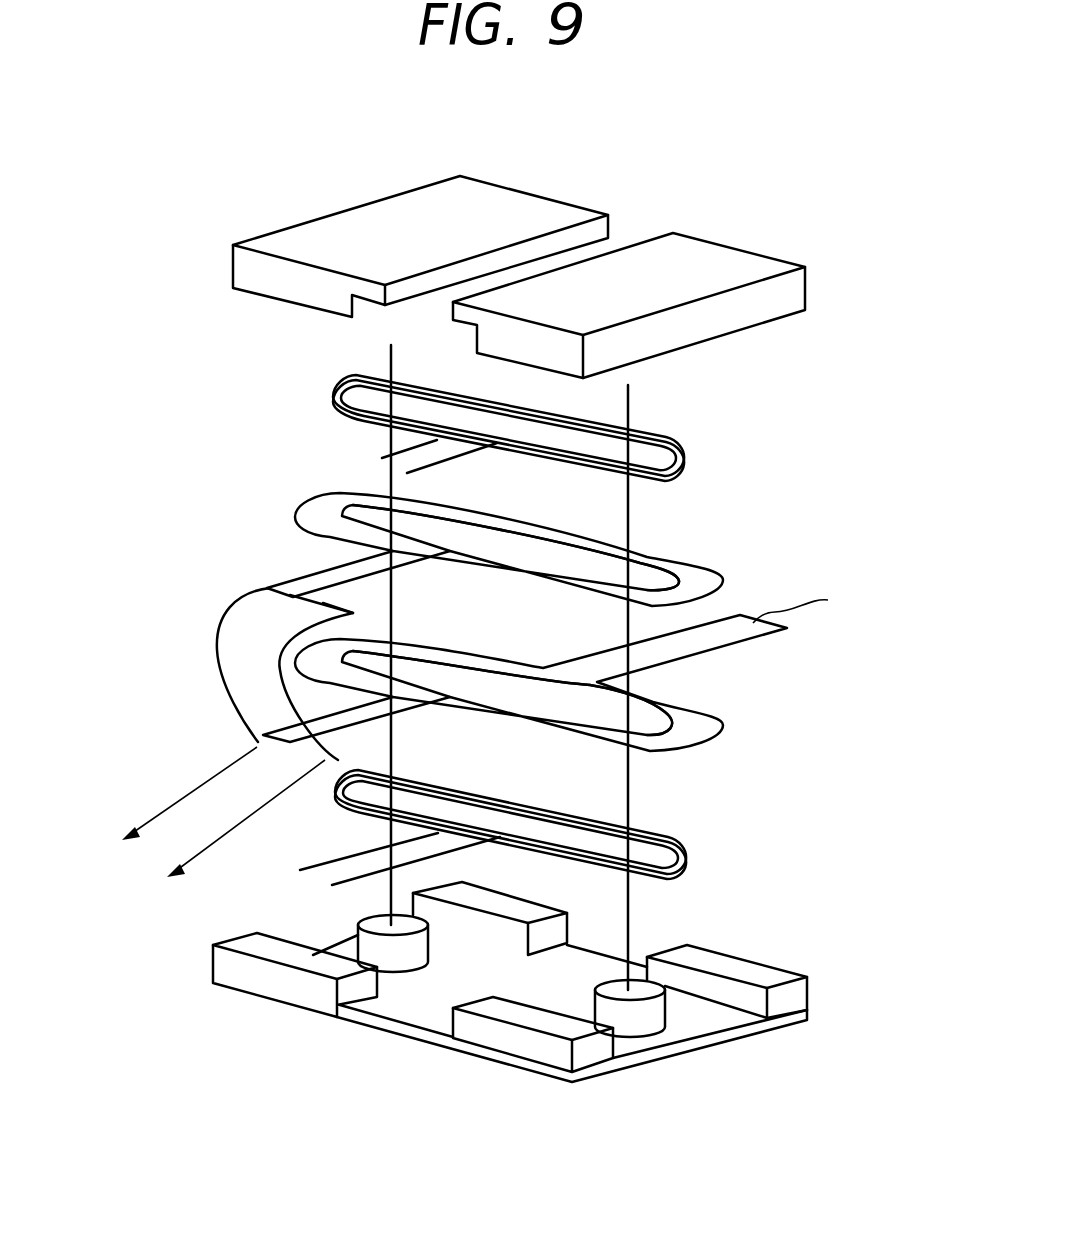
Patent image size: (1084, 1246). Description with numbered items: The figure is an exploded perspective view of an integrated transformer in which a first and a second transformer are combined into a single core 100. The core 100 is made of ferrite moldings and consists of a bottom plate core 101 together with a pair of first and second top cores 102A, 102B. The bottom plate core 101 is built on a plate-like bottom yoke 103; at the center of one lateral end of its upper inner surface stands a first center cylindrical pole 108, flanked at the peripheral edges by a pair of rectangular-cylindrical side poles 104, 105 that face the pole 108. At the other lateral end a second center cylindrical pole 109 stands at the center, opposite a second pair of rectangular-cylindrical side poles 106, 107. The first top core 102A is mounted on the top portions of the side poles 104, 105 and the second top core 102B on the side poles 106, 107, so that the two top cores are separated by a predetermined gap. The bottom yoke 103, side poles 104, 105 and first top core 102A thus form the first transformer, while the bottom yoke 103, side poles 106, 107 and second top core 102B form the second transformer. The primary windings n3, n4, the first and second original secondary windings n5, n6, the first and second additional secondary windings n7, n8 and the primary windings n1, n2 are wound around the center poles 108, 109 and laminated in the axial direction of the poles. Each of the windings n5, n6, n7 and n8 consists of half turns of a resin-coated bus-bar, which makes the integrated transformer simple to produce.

The core 100 is at (837, 982).
The bottom plate core 101 is at (723, 1042).
The first top core 102A is at (543, 208).
The second top core 102B is at (735, 258).
The bottom yoke 103 is at (427, 1002).
The side pole 104 is at (257, 977).
The side pole 105 is at (557, 928).
The side pole 106 is at (527, 1050).
The side pole 107 is at (767, 973).
The first center cylindrical pole 108 is at (393, 962).
The second center cylindrical pole 109 is at (648, 1024).
The primary winding n1 is at (353, 390).
The primary winding n2 is at (687, 463).
The primary winding n3 is at (438, 783).
The primary winding n4 is at (665, 843).
The first original secondary winding n5 is at (487, 660).
The second original secondary winding n6 is at (703, 723).
The first additional secondary winding n7 is at (313, 512).
The second additional secondary winding n8 is at (683, 567).